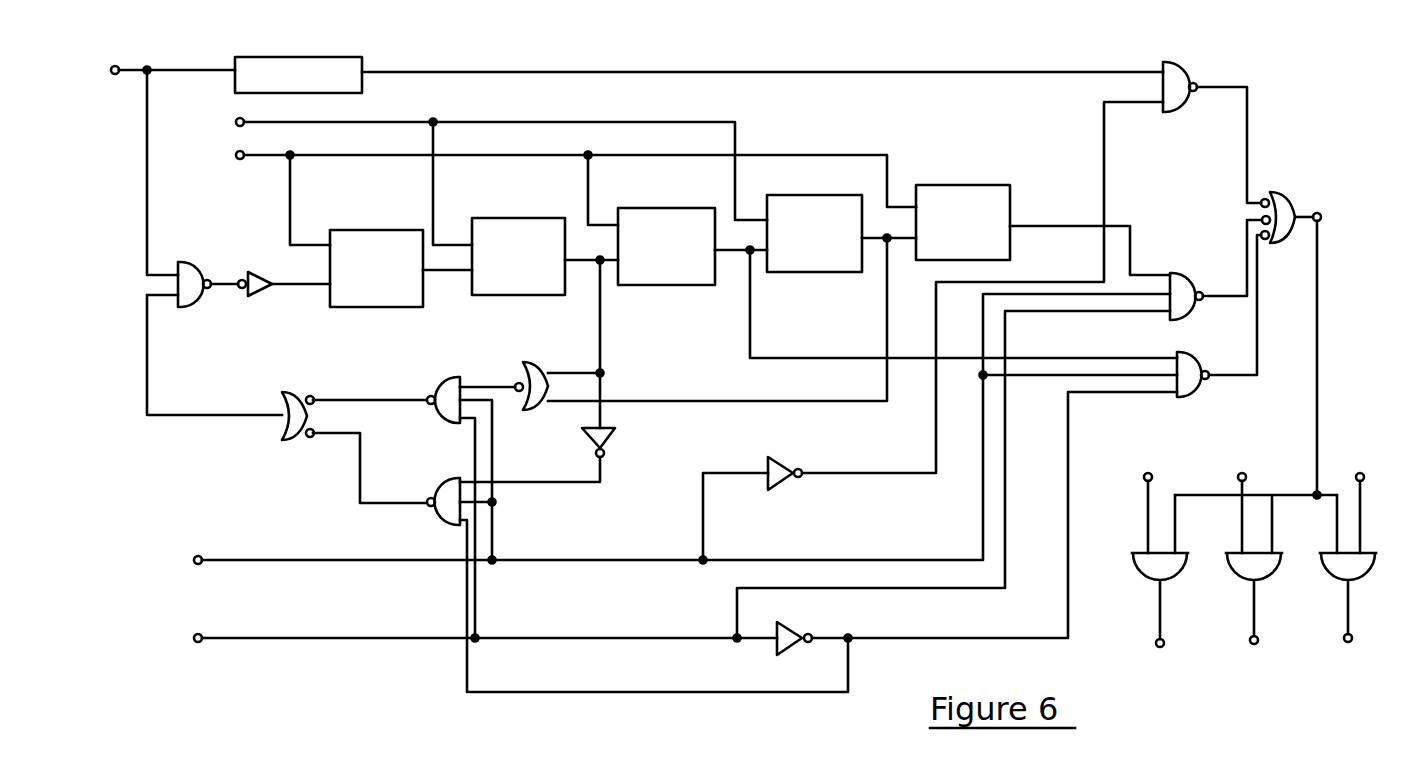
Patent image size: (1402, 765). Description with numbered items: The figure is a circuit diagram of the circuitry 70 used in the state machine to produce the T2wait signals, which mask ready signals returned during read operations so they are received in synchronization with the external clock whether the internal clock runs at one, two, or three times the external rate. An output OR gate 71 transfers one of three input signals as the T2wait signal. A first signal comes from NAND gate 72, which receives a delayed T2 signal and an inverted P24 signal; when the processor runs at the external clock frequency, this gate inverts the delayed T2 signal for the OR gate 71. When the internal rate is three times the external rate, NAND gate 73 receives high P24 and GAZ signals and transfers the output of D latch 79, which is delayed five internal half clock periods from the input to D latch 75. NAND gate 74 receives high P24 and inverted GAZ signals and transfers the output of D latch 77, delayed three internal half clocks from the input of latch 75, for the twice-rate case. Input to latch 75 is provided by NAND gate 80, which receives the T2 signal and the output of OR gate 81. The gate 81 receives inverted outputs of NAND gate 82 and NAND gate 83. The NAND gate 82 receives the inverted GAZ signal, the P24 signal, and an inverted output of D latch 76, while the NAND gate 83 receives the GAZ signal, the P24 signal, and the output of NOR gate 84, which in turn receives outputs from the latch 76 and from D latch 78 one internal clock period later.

The circuitry 70 is at (681, 365).
The output OR gate 71 is at (1283, 205).
The NAND gate 72 is at (1177, 95).
The NAND gate 73 is at (1178, 287).
The NAND gate 74 is at (1186, 382).
The D latch 75 is at (380, 243).
The D latch 76 is at (540, 238).
The D latch 77 is at (696, 222).
The D latch 78 is at (820, 207).
The D latch 79 is at (980, 200).
The NAND gate 80 is at (188, 277).
The OR gate 81 is at (288, 403).
The NAND gate 82 is at (448, 487).
The NAND gate 83 is at (452, 397).
The NOR gate 84 is at (538, 373).